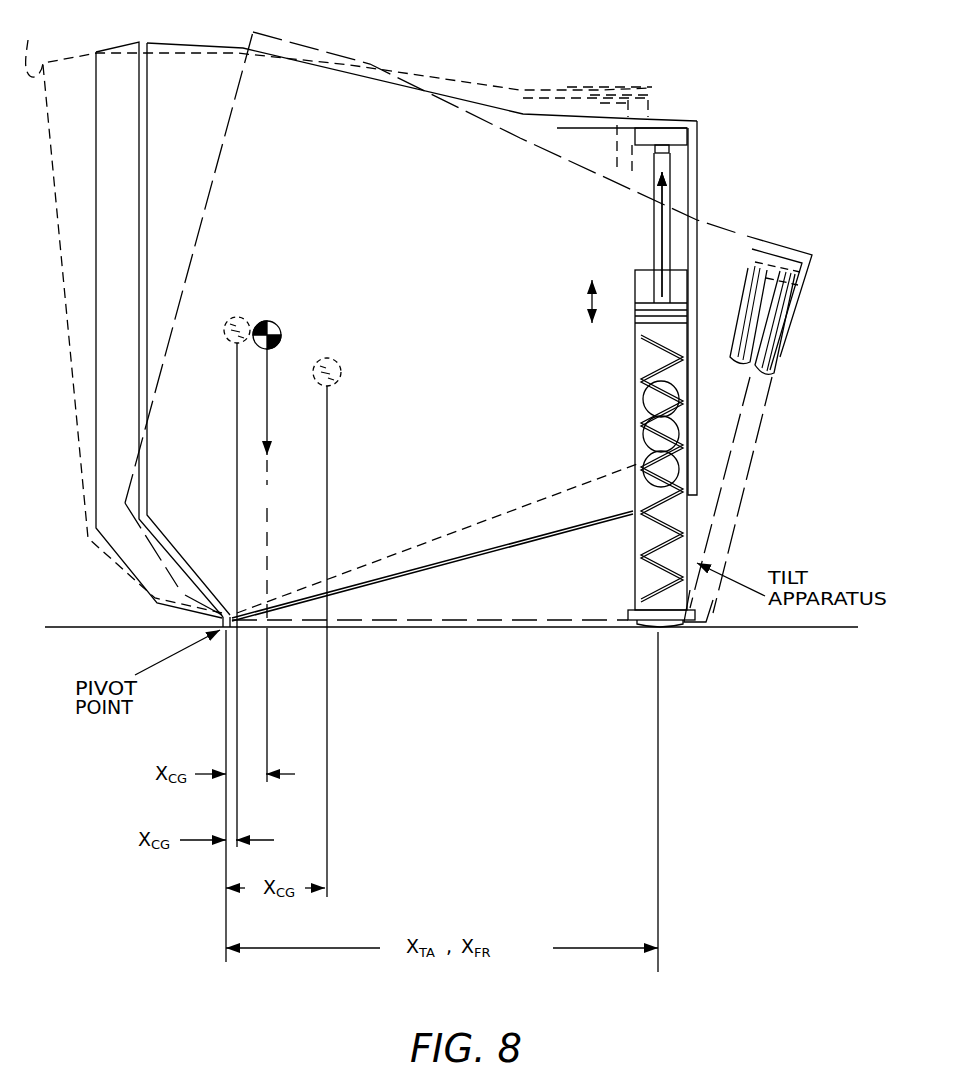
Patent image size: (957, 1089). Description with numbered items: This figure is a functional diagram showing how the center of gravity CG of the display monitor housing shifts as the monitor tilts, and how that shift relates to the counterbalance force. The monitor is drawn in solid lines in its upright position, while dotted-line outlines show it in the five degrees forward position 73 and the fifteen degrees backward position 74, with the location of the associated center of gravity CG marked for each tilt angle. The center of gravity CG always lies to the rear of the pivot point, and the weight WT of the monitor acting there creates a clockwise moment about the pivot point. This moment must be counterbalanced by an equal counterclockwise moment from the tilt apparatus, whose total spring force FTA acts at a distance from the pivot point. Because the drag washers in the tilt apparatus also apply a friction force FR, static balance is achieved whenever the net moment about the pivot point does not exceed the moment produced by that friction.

The five degrees forward position 73 is at (337, 313).
The fifteen degrees backward position 74 is at (792, 326).
The center of gravity CG is at (281, 329).
The weight of display monitor WT is at (266, 488).
The friction force of drag washers FR is at (610, 301).
The total spring force of tilt apparatus FTA is at (703, 225).